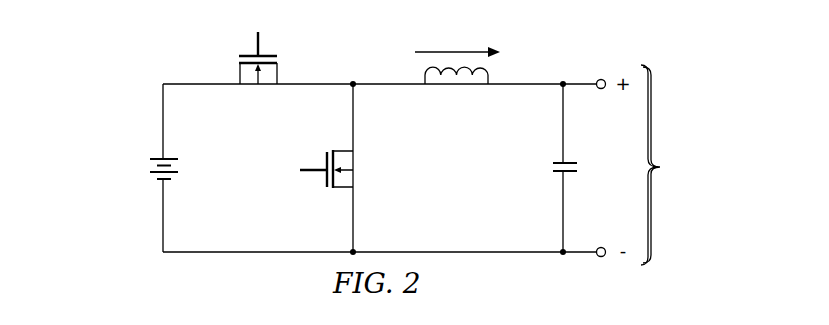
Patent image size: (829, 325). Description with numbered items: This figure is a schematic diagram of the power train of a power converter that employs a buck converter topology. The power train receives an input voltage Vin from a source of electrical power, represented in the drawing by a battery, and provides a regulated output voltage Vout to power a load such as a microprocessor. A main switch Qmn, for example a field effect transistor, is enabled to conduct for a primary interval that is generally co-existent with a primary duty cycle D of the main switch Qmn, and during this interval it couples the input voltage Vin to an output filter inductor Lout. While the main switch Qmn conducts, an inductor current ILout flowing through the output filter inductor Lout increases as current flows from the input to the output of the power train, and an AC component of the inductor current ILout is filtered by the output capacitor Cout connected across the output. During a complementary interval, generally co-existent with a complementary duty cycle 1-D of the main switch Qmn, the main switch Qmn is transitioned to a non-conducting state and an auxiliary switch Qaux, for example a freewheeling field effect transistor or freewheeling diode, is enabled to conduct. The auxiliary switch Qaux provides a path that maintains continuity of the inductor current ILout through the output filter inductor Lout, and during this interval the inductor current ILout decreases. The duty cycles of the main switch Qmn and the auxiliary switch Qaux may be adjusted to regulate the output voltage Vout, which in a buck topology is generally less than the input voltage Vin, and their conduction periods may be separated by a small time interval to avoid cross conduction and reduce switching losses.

The input voltage Vin is at (144, 170).
The main switch Qmn is at (256, 74).
The primary duty cycle D is at (259, 17).
The auxiliary switch Qaux is at (350, 169).
The complementary duty cycle 1-D is at (279, 171).
The output filter inductor Lout is at (456, 91).
The inductor current ILout is at (457, 38).
The output capacitor Cout is at (540, 164).
The output voltage Vout is at (672, 165).